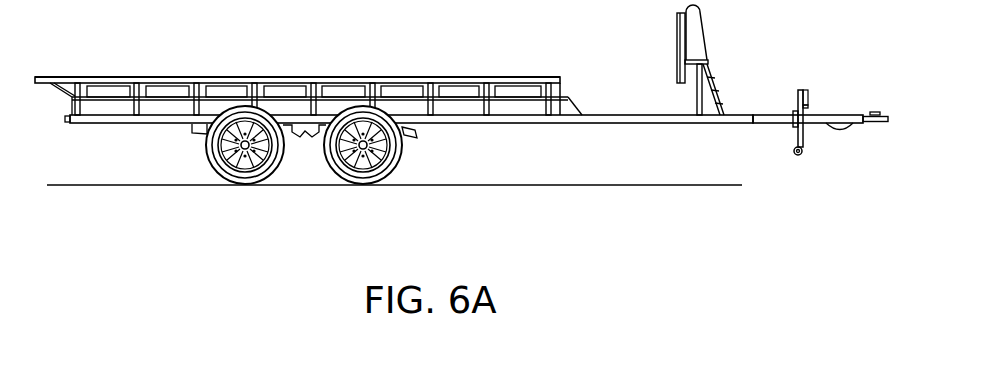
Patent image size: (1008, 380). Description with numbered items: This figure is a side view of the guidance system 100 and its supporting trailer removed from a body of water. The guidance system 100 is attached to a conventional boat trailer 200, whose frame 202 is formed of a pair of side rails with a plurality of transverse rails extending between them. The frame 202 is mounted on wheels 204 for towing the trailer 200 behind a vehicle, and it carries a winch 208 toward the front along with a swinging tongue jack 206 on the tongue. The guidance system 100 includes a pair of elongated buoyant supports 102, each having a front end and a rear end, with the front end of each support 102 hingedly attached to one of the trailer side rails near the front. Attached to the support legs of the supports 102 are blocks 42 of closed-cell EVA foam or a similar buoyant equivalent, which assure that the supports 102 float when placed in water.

The blocks 42 is at (103, 90).
The guidance system 100 is at (200, 67).
The elongated buoyant supports 102 is at (350, 77).
The boat trailer 200 is at (628, 115).
The frame 202 is at (537, 123).
The wheels 204 is at (363, 185).
The swinging tongue jack 206 is at (800, 140).
The winch 208 is at (686, 45).